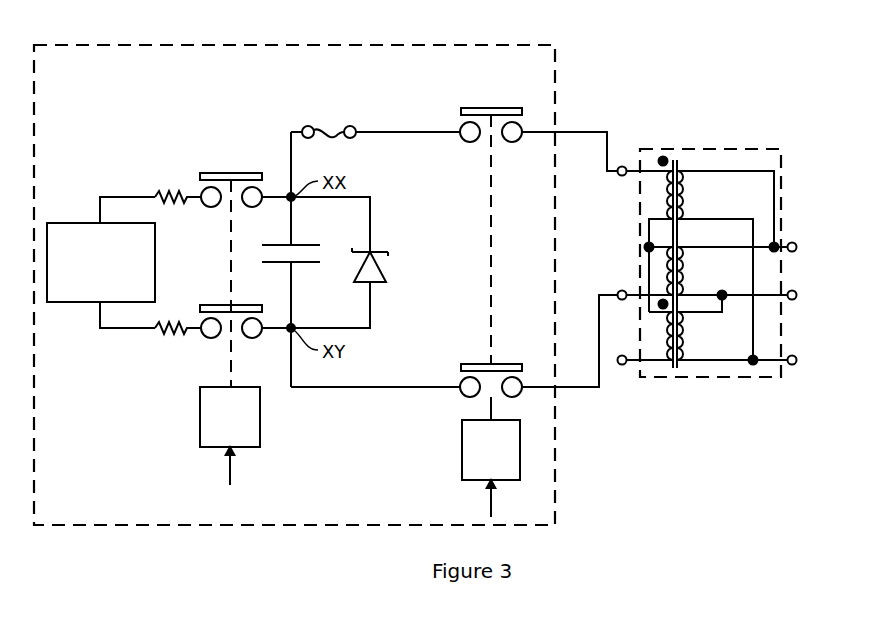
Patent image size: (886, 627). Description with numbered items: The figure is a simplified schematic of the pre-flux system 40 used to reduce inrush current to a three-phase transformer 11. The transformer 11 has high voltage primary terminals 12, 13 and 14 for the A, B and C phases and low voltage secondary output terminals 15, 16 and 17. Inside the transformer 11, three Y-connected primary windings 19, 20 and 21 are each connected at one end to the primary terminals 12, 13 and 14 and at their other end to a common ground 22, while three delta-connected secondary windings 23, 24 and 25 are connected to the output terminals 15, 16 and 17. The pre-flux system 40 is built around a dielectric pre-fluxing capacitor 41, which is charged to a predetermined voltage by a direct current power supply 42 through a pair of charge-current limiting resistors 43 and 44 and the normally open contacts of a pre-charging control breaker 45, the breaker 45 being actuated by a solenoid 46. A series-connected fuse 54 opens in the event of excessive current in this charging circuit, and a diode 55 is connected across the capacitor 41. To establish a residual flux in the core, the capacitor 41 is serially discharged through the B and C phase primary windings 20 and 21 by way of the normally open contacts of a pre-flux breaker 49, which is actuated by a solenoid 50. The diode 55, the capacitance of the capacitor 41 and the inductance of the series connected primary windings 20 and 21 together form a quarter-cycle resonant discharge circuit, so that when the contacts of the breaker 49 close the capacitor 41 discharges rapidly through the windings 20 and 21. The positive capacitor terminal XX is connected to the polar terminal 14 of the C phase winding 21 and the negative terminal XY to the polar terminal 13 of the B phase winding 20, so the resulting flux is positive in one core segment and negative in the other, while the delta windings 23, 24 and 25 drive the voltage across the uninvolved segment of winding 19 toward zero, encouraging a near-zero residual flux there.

The pre-flux system 40 is at (176, 42).
The three-phase transformer 11 is at (693, 144).
The high voltage primary terminal 12 is at (622, 366).
The high voltage primary terminal 13 is at (617, 294).
The high voltage primary terminal 14 is at (625, 166).
The low voltage secondary output terminal 15 is at (795, 301).
The low voltage secondary output terminal 16 is at (795, 366).
The low voltage secondary output terminal 17 is at (795, 253).
The primary winding 19 is at (661, 336).
The primary winding 20 is at (663, 283).
The primary winding 21 is at (660, 199).
The common ground 22 is at (645, 247).
The secondary winding 23 is at (693, 330).
The secondary winding 24 is at (693, 268).
The secondary winding 25 is at (693, 188).
The pre-fluxing capacitor 41 is at (283, 263).
The direct current power supply 42 is at (74, 223).
The charge-current limiting resistor 43 is at (166, 190).
The charge-current limiting resistor 44 is at (166, 338).
The pre-charging control breaker 45 is at (228, 168).
The solenoid 46 is at (200, 420).
The pre-flux breaker 49 is at (487, 103).
The solenoid 50 is at (462, 448).
The fuse 54 is at (318, 125).
The diode 55 is at (385, 266).